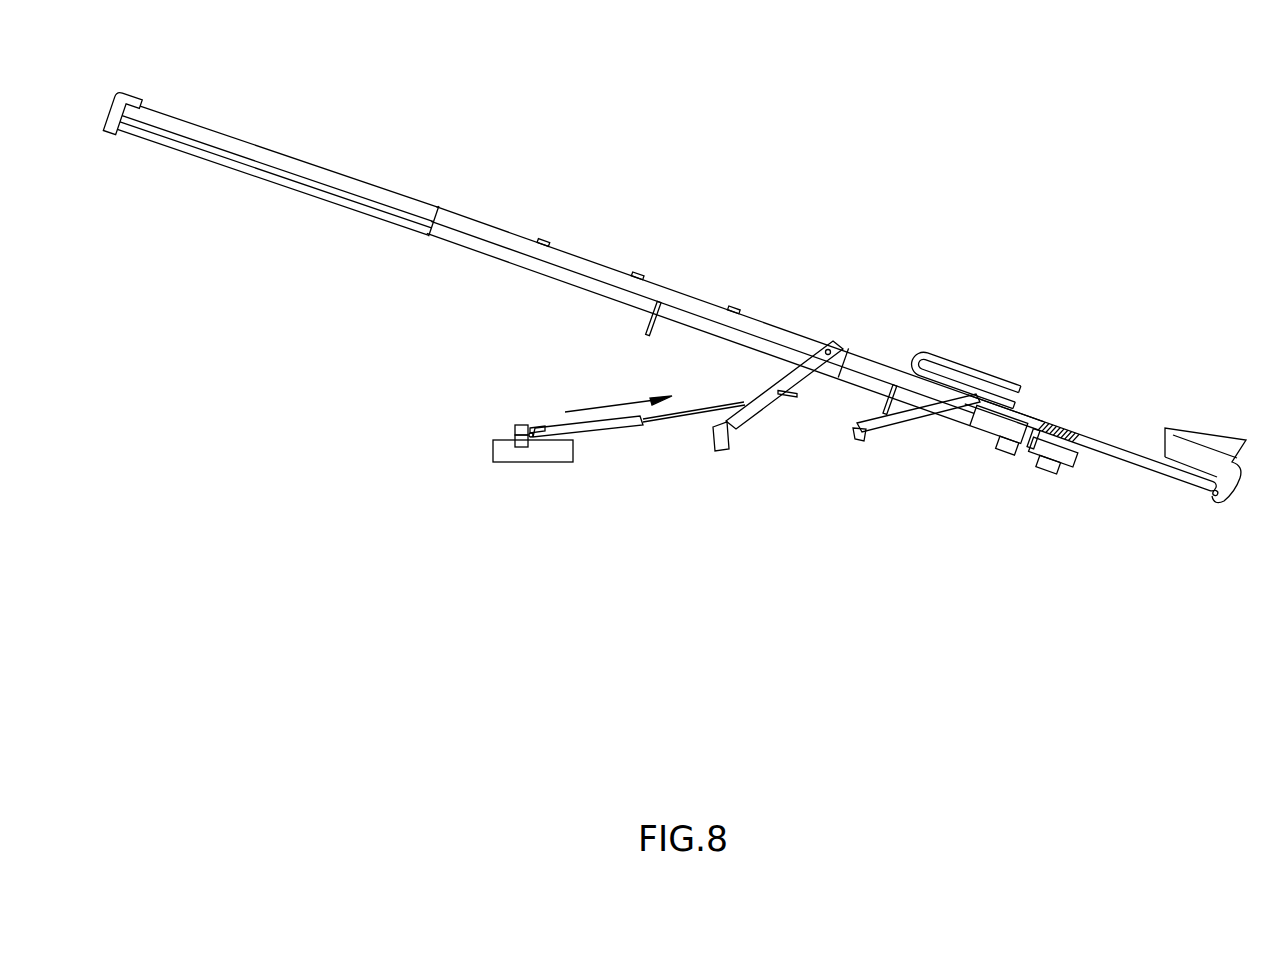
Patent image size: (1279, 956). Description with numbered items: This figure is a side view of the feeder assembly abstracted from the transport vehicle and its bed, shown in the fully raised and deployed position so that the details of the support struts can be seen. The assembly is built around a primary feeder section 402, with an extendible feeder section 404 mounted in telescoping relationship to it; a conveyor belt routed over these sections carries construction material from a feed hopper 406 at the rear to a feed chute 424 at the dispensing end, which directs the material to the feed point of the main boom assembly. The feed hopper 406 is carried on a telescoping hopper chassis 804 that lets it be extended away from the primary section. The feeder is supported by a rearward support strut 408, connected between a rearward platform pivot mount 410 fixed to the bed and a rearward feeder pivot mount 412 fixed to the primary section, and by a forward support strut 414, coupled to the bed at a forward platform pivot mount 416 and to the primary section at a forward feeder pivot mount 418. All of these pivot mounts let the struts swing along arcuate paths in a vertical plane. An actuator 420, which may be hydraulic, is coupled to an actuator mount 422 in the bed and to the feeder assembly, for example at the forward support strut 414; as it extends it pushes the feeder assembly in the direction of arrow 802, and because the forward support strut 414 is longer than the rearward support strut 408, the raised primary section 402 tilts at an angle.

The primary feeder section 402 is at (713, 303).
The extendible feeder section 404 is at (310, 163).
The feed hopper 406 is at (1222, 430).
The rearward support strut 408 is at (920, 423).
The rearward platform pivot mount 410 is at (870, 440).
The rearward feeder pivot mount 412 is at (981, 385).
The forward support strut 414 is at (773, 398).
The forward platform pivot mount 416 is at (720, 450).
The forward feeder pivot mount 418 is at (838, 343).
The actuator 420 is at (608, 428).
The actuator mount 422 is at (523, 455).
The feed chute 424 is at (122, 93).
The arrow 802 is at (608, 405).
The telescoping hopper chassis 804 is at (1130, 468).